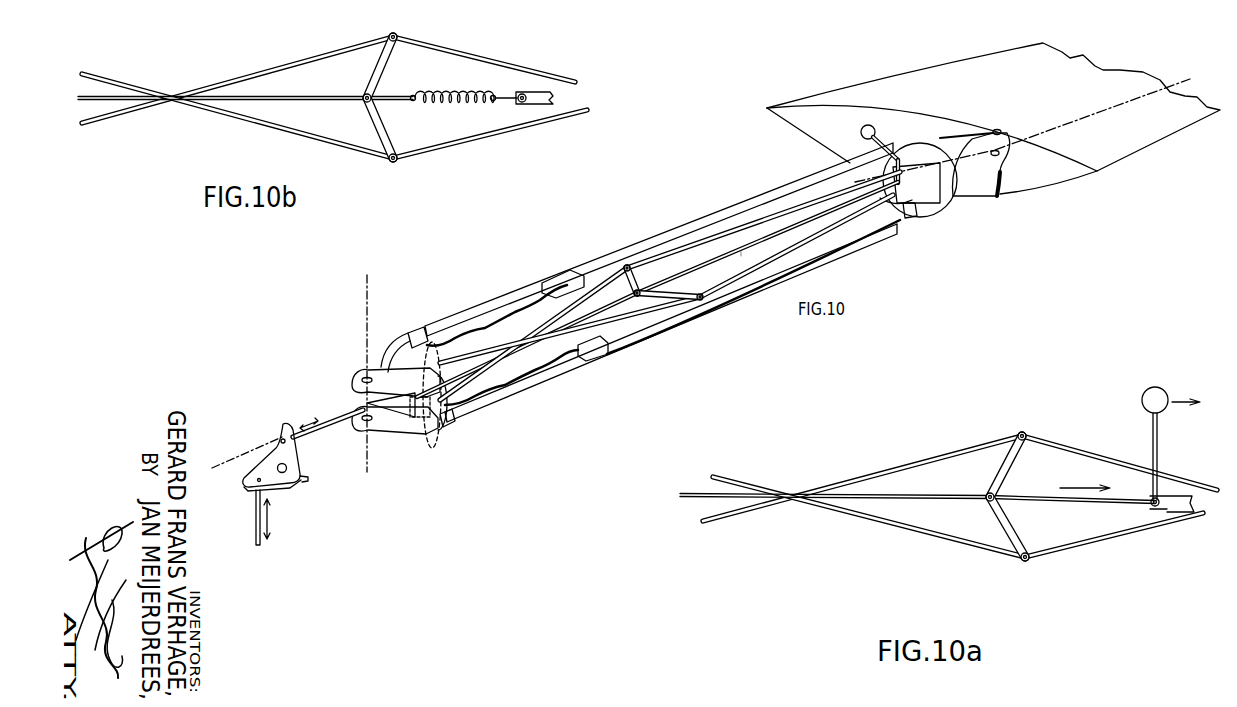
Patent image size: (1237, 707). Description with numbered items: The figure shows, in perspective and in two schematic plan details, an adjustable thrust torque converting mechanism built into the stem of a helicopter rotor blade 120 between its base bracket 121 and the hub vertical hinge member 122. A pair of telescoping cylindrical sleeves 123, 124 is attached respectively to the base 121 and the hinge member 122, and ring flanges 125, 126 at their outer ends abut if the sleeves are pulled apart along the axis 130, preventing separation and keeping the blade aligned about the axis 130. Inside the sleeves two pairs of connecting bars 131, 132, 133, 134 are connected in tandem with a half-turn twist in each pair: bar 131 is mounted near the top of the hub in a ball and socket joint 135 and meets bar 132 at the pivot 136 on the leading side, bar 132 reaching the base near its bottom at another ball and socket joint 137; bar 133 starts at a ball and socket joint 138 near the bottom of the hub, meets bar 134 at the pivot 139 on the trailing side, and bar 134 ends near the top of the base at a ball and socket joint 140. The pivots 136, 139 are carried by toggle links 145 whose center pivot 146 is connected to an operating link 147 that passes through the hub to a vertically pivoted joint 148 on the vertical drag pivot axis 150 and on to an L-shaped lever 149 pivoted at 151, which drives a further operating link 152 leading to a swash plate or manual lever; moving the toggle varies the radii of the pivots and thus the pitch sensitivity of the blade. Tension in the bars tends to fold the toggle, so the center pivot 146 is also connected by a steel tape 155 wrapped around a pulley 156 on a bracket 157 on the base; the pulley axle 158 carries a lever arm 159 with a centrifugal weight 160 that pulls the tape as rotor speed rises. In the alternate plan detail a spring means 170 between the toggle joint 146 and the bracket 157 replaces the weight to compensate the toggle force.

In FIG. 10, the blade 120 is at (1035, 91).
In FIG. 10, the base bracket 121 is at (985, 193).
In FIG. 10, the hub vertical hinge member 122 is at (380, 434).
In FIG. 10, the telescoping cylindrical sleeve 123 is at (680, 229).
In FIG. 10, the telescoping cylindrical sleeve 124 is at (500, 310).
In FIG. 10, the ring flange 125 is at (418, 327).
In FIG. 10, the ring flange 126 is at (560, 272).
In FIG. 10, the axis 130 is at (1100, 108).
In FIG. 10B, the connecting bar 131 is at (237, 116).
In FIG. 10A, the connecting bar 131 is at (930, 532).
In FIG. 10, the connecting bar 131 is at (478, 354).
In FIG. 10B, the connecting bar 132 is at (485, 139).
In FIG. 10A, the connecting bar 132 is at (1064, 550).
In FIG. 10, the connecting bar 132 is at (773, 243).
In FIG. 10B, the connecting bar 133 is at (277, 67).
In FIG. 10A, the connecting bar 133 is at (909, 465).
In FIG. 10, the connecting bar 133 is at (477, 371).
In FIG. 10B, the connecting bar 134 is at (485, 58).
In FIG. 10A, the connecting bar 134 is at (1085, 462).
In FIG. 10, the connecting bar 134 is at (770, 219).
In FIG. 10, the ball and socket joint 135 is at (404, 328).
In FIG. 10B, the pivot 136 is at (400, 160).
In FIG. 10A, the pivot 136 is at (1024, 563).
In FIG. 10, the pivot 136 is at (704, 303).
In FIG. 10, the ball and socket joint 137 is at (930, 204).
In FIG. 10, the ball and socket joint 138 is at (433, 449).
In FIG. 10B, the pivot 139 is at (398, 35).
In FIG. 10A, the pivot 139 is at (1029, 432).
In FIG. 10, the pivot 139 is at (626, 264).
In FIG. 10, the ball and socket joint 140 is at (912, 150).
In FIG. 10B, the toggle links 145 is at (386, 71).
In FIG. 10A, the toggle links 145 is at (1012, 469).
In FIG. 10, the toggle links 145 is at (641, 283).
In FIG. 10B, the center pivot 146 is at (364, 102).
In FIG. 10A, the center pivot 146 is at (986, 504).
In FIG. 10, the center pivot 146 is at (637, 300).
In FIG. 10B, the operating link 147 is at (278, 97).
In FIG. 10A, the operating link 147 is at (704, 499).
In FIG. 10, the operating link 147 is at (572, 335).
In FIG. 10, the vertically pivoted joint 148 is at (346, 409).
In FIG. 10, the L-shaped lever 149 is at (283, 486).
In FIG. 10, the vertical drag pivot axis 150 is at (366, 334).
In FIG. 10, the horizontal pivot 151 is at (309, 482).
In FIG. 10, the operating link 152 is at (268, 522).
In FIG. 10A, the steel tape 155 is at (1047, 503).
In FIG. 10, the steel tape 155 is at (741, 253).
In FIG. 10A, the pulley 156 is at (1161, 526).
In FIG. 10, the pulley 156 is at (911, 218).
In FIG. 10B, the bracket 157 is at (540, 104).
In FIG. 10A, the bracket 157 is at (1174, 518).
In FIG. 10, the bracket 157 is at (940, 200).
In FIG. 10A, the axle 158 is at (1150, 508).
In FIG. 10, the axle 158 is at (891, 162).
In FIG. 10A, the lever arm 159 is at (1158, 446).
In FIG. 10, the lever arm 159 is at (882, 142).
In FIG. 10A, the weight 160 is at (1167, 392).
In FIG. 10, the weight 160 is at (861, 133).
In FIG. 10B, the spring means 170 is at (473, 106).